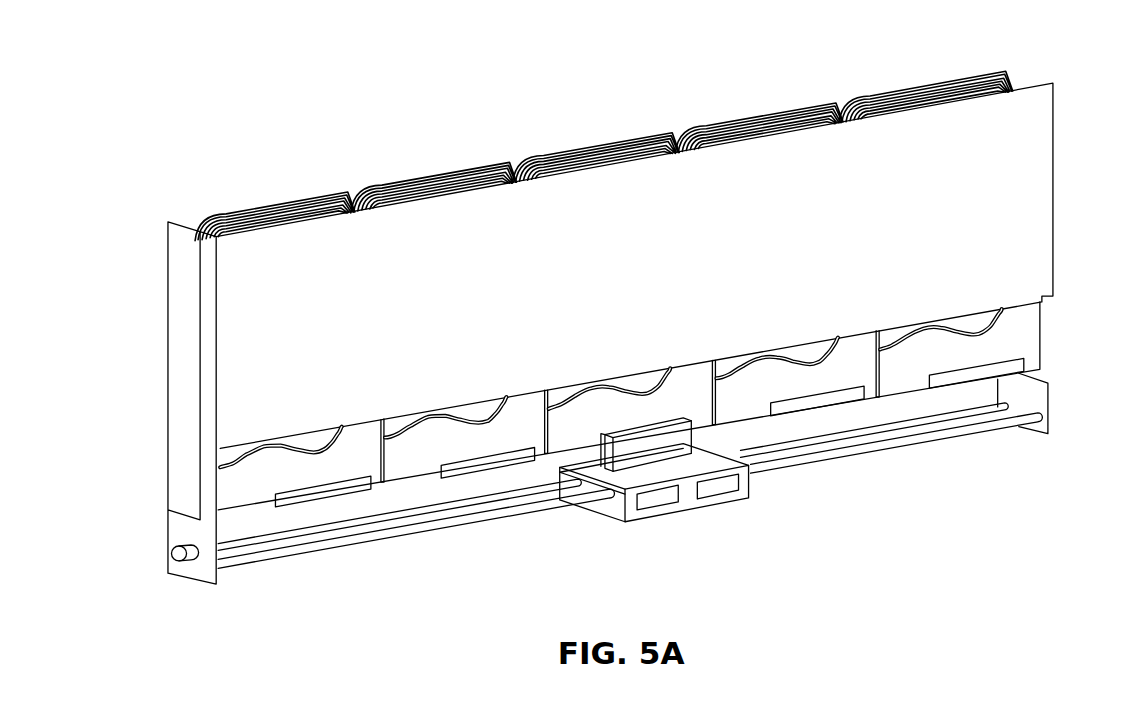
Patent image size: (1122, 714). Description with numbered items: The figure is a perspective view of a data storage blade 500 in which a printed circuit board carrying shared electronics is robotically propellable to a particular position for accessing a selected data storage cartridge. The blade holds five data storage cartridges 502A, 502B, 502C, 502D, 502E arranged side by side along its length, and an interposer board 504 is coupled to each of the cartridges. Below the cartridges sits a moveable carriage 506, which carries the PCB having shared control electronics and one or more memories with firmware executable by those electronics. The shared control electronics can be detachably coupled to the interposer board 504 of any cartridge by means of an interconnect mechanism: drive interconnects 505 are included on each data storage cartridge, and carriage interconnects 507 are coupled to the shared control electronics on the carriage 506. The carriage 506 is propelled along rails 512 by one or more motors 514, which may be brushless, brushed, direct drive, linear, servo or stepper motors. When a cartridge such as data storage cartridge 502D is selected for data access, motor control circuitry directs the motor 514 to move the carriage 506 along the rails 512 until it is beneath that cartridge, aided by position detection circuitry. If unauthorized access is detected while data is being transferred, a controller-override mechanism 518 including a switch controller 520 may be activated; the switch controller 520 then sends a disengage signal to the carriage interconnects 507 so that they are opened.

The data storage blade 500 is at (268, 108).
The data storage cartridge 502A is at (293, 202).
The data storage cartridge 502B is at (461, 170).
The data storage cartridge 502C is at (628, 140).
The data storage cartridge 502D is at (795, 107).
The data storage cartridge 502E is at (961, 77).
The interposer board 504 is at (1024, 333).
The drive interconnects 505 is at (303, 502).
The moveable carriage 506 is at (775, 505).
The carriage interconnects 507 is at (680, 446).
The rails 512 is at (243, 545).
The motor 514 is at (662, 497).
The controller-override mechanism 518 is at (592, 482).
The switch controller 520 is at (723, 488).